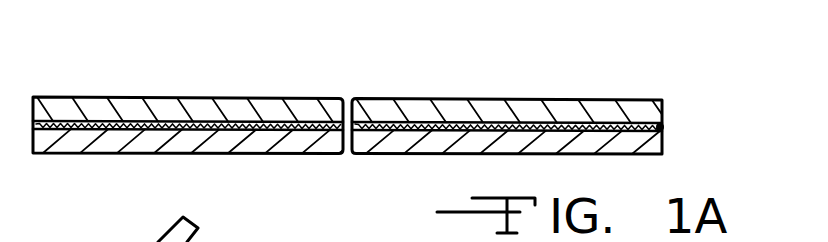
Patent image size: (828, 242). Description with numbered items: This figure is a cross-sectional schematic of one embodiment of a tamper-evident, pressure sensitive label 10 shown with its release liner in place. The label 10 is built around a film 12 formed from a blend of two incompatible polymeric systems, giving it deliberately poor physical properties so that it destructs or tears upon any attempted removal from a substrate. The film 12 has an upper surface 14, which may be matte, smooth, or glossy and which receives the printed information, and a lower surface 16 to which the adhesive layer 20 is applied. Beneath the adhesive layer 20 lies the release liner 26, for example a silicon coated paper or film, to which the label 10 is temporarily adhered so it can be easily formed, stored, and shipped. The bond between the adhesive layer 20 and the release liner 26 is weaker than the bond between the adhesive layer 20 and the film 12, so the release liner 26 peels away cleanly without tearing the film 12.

The label 10 is at (115, 73).
The film 12 is at (567, 100).
The upper surface 14 is at (251, 97).
The lower surface 16 is at (118, 130).
The adhesive layer 20 is at (664, 127).
The release liner 26 is at (657, 142).